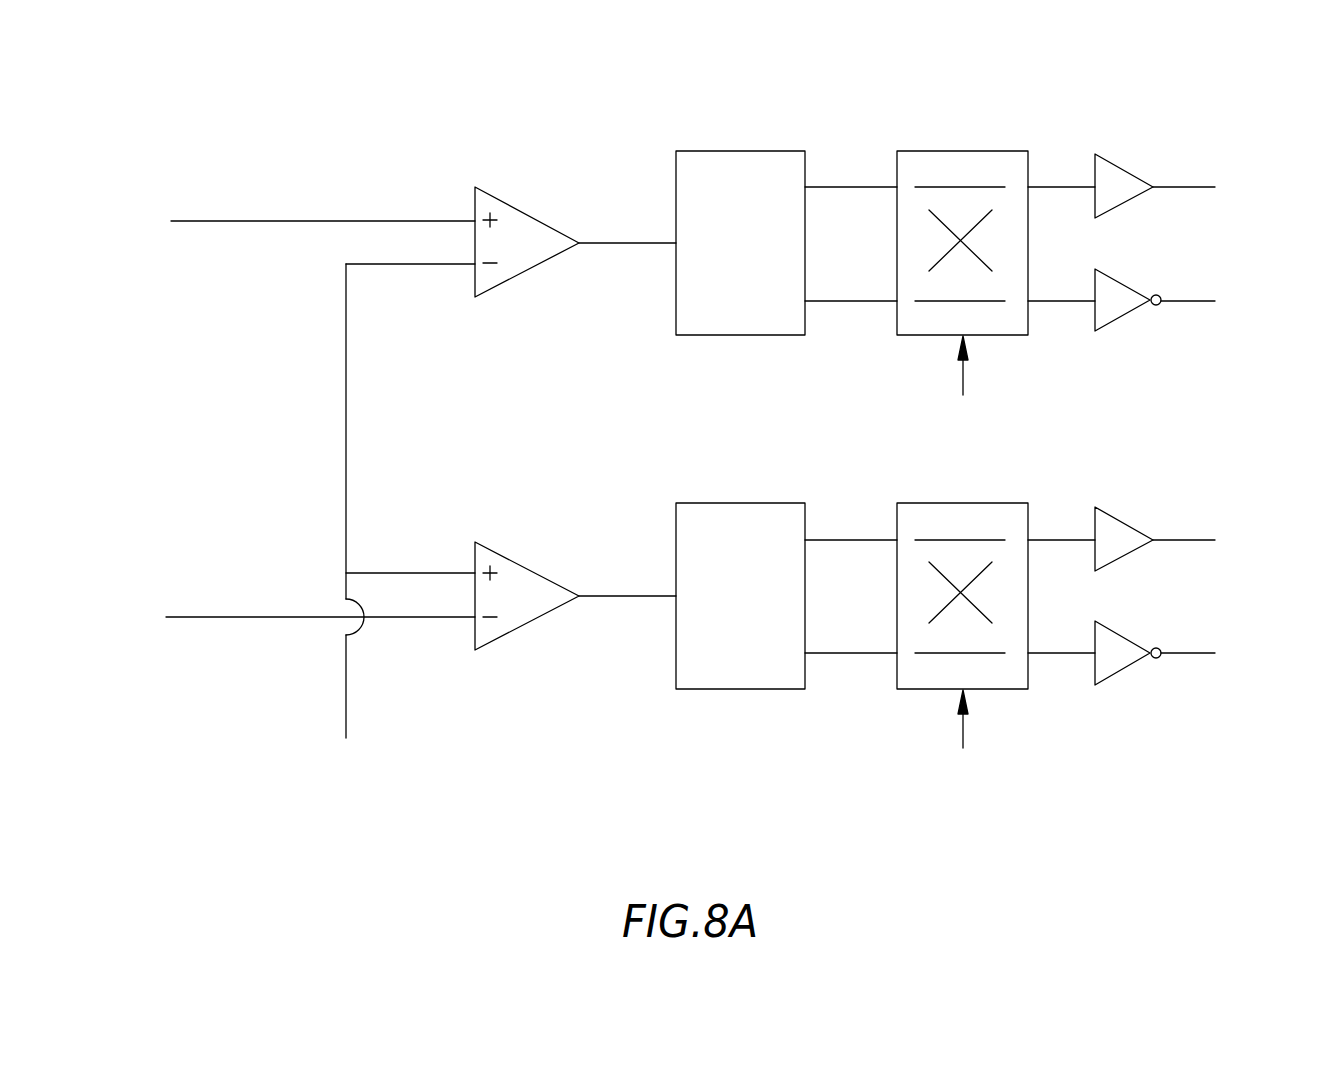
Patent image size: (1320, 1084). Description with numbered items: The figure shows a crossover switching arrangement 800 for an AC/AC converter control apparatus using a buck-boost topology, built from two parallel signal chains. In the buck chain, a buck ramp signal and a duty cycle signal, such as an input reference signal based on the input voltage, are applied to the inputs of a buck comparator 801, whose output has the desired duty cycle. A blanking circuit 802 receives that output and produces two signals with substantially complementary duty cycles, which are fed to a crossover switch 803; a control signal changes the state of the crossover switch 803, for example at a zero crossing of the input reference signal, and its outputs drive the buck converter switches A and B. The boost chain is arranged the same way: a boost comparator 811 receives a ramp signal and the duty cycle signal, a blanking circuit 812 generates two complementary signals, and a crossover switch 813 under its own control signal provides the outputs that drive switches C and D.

The crossover switching arrangement 800 is at (1220, 118).
The boost comparator 811 is at (528, 272).
The blanking circuit 812 is at (740, 336).
The crossover switch 813 is at (934, 336).
The buck comparator 801 is at (528, 623).
The blanking circuit 802 is at (740, 689).
The crossover switch 803 is at (934, 689).